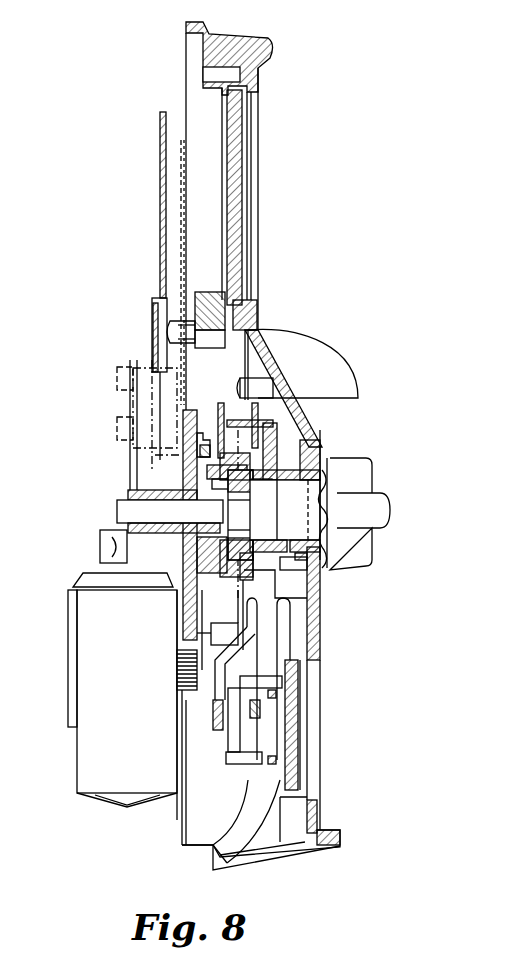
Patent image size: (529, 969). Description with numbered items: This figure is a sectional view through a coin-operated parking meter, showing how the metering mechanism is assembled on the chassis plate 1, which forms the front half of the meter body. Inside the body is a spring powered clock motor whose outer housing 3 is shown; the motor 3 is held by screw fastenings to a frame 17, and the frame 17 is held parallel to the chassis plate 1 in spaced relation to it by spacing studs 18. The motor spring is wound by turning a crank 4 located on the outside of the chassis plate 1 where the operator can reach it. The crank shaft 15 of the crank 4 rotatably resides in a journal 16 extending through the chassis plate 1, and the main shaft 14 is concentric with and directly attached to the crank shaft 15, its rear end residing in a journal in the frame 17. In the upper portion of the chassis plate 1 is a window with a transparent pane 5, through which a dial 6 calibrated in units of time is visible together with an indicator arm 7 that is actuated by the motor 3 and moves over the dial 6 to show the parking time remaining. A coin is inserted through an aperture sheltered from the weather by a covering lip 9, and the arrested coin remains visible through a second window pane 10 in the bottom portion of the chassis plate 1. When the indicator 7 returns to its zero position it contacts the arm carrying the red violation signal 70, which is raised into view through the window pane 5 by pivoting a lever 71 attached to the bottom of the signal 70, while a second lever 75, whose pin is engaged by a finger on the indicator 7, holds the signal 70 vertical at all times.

The chassis plate 1 is at (318, 622).
The clock motor 3 is at (106, 730).
The crank 4 is at (358, 542).
The transparent pane 5 is at (236, 180).
The dial 6 is at (225, 110).
The indicator arm 7 is at (188, 167).
The covering lip 9 is at (327, 357).
The second window pane 10 is at (296, 733).
The main shaft 14 is at (117, 511).
The crank shaft 15 is at (300, 493).
The journal 16 is at (324, 555).
The frame 17 is at (128, 495).
The spacing studs 18 is at (100, 557).
The violation signal 70 is at (160, 165).
The lever 71 is at (152, 336).
The second lever 75 is at (150, 394).